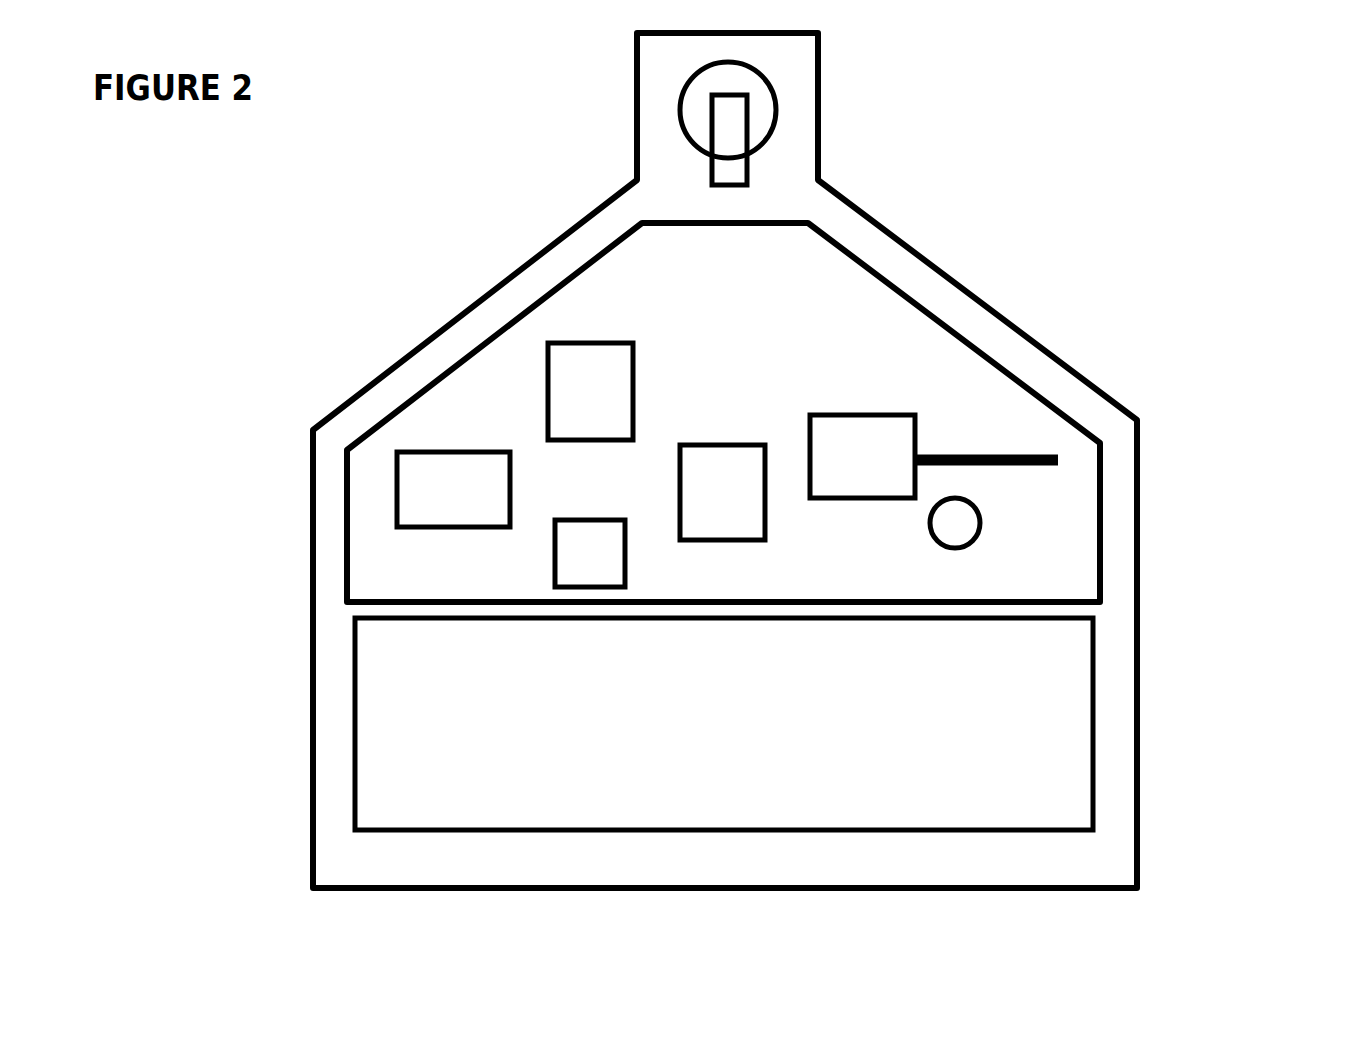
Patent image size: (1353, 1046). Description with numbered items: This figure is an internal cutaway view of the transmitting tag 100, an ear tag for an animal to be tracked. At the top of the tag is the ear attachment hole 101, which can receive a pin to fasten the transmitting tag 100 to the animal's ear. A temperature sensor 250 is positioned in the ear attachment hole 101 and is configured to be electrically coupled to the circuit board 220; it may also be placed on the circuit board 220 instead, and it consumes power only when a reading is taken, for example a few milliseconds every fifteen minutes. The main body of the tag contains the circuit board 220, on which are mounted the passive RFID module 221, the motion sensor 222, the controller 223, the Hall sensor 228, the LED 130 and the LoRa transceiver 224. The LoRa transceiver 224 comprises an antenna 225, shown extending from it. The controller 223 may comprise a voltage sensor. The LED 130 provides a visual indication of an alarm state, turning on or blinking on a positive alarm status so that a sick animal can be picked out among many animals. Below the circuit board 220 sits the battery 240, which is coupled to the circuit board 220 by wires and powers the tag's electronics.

The transmitting tag 100 is at (289, 462).
The ear attachment hole 101 is at (656, 110).
The temperature sensor 250 is at (688, 140).
The circuit board 220 is at (1124, 505).
The passive RFID module 221 is at (373, 487).
The motion sensor 222 is at (524, 390).
The controller 223 is at (747, 558).
The LoRa transceiver 224 is at (863, 391).
The antenna 225 is at (987, 430).
The Hall sensor 228 is at (529, 553).
The LED 130 is at (1011, 524).
The battery 240 is at (1124, 725).